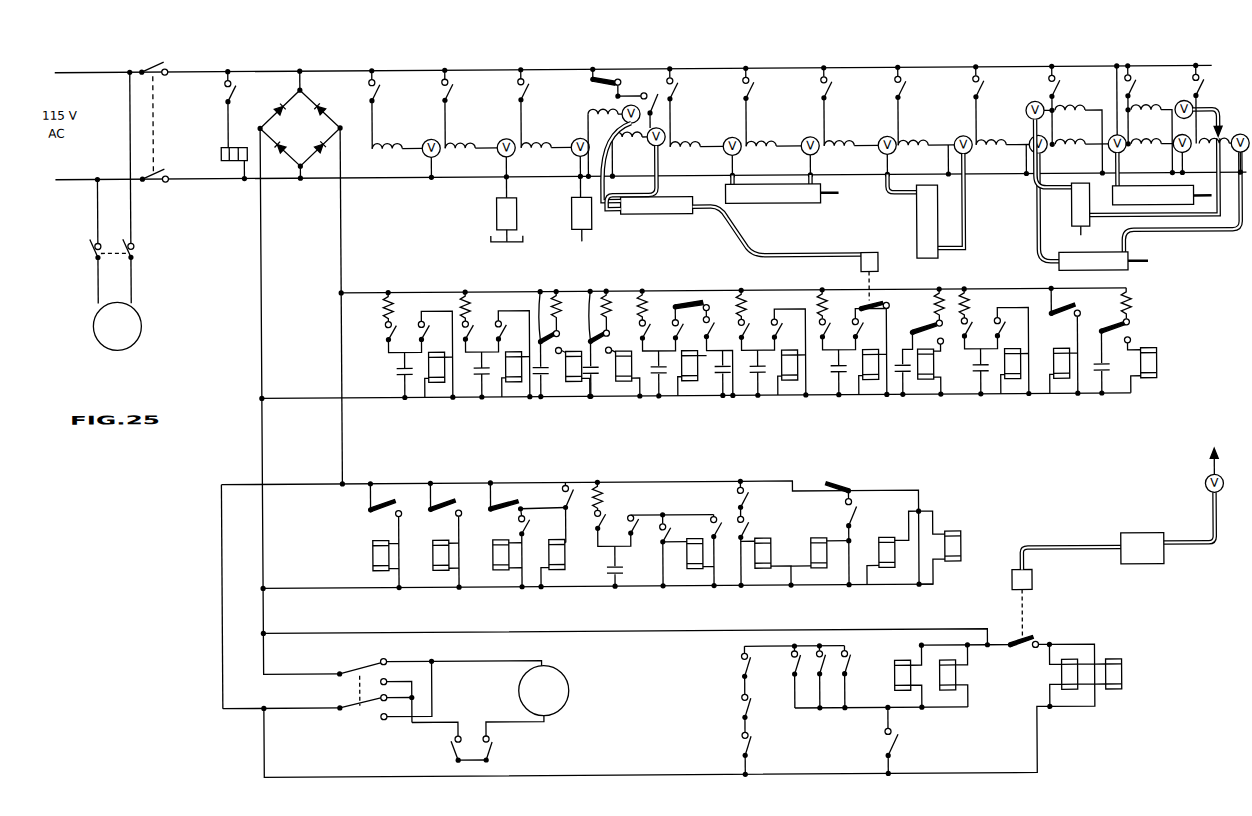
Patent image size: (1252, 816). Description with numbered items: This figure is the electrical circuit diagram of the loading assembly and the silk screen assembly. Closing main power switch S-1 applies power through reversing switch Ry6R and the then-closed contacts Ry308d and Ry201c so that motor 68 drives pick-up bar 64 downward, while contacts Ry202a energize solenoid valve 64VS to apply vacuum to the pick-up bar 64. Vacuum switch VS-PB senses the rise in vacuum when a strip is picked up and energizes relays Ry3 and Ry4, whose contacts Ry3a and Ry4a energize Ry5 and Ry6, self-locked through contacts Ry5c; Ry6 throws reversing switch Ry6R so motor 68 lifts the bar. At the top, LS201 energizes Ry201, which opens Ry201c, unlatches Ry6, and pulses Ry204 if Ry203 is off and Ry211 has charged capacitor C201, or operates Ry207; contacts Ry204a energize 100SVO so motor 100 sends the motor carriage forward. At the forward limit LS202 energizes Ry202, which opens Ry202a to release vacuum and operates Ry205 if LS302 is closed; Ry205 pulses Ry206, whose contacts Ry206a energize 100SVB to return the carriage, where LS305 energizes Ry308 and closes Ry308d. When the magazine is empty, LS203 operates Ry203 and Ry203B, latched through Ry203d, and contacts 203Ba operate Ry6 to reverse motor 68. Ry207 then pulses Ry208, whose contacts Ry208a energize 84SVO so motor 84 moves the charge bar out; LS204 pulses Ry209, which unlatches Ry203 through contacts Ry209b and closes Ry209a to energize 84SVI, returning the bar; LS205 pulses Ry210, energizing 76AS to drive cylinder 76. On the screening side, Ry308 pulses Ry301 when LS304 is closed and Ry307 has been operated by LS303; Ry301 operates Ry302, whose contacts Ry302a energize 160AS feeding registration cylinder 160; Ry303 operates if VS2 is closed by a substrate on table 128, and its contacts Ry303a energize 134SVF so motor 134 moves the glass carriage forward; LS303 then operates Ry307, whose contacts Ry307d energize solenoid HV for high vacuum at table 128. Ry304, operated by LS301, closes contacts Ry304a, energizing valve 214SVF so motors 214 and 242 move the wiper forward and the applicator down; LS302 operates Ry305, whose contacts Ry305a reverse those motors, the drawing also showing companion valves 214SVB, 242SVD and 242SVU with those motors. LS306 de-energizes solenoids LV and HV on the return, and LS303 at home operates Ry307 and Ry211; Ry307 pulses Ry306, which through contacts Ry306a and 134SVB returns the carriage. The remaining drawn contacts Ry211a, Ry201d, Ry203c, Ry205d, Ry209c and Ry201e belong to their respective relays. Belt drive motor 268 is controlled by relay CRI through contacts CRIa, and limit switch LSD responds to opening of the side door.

The motor 268 is at (140, 333).
The motor 68 is at (558, 670).
The cylinder 76 is at (498, 212).
The cylinder 160 is at (573, 213).
The cylinder 128 is at (660, 216).
The cylinder 100 is at (788, 205).
The cylinder 84 is at (918, 214).
The cylinder 242 is at (1073, 214).
The cylinder 214 is at (1140, 189).
The cylinder 134 is at (1088, 257).
The vacuum source unit 64 is at (1150, 540).
The vacuum valve 64VS is at (1226, 491).
The solenoid valve 76AS is at (477, 159).
The solenoid valve 160AS is at (551, 158).
The solenoid valve 100SVO is at (706, 149).
The solenoid valve 100SVB is at (784, 149).
The solenoid valve 84SVO is at (861, 148).
The solenoid valve 84SVI is at (937, 148).
The solenoid valve 134SVF is at (1012, 147).
The solenoid valve 134SVB is at (1226, 134).
The solenoid valve 242SVD is at (1036, 103).
The solenoid valve 242SVU is at (1197, 78).
The solenoid valve 214SVF is at (1116, 94).
The solenoid valve 214SVB is at (1193, 158).
The low vacuum valve LV is at (603, 142).
The high vacuum valve HV is at (637, 146).
The main switch S-1 is at (153, 113).
The limit switch LSD is at (243, 86).
The control relay coil CRI is at (223, 152).
The control relay contact CRIa is at (92, 256).
The capacitor C201 is at (621, 552).
The vacuum switch VS2 is at (876, 300).
The vacuum switch push button VS-PB is at (1032, 631).
The limit switch LS201 is at (392, 497).
The limit switch LS202 is at (452, 497).
The limit switch LS203 is at (512, 497).
The limit switch LS204 is at (544, 300).
The limit switch LS205 is at (594, 300).
The limit switch LS301 is at (1102, 325).
The limit switch LS302 is at (911, 330).
The limit switch LS303 is at (836, 484).
The limit switch LS304 is at (700, 300).
The limit switch LS305 is at (1058, 301).
The limit switch LS306 is at (613, 77).
The relay Ry201 is at (362, 527).
The relay Ry202 is at (433, 526).
The relay Ry203 is at (515, 525).
The relay Ry203B is at (565, 548).
The relay Ry204 is at (692, 515).
The relay Ry205 is at (825, 569).
The relay Ry206 is at (433, 412).
The relay Ry207 is at (778, 569).
The relay Ry208 is at (474, 303).
The relay Ry209 is at (574, 396).
The relay Ry210 is at (626, 396).
The relay Ry211 is at (884, 538).
The relay Ry301 is at (692, 396).
The relay Ry302 is at (738, 303).
The relay Ry303 is at (834, 303).
The relay Ry304 is at (1157, 381).
The relay Ry305 is at (918, 396).
The relay Ry306 is at (983, 305).
The relay Ry307 is at (961, 562).
The relay Ry308 is at (1064, 396).
The relay Ry3 is at (1078, 662).
The relay Ry4 is at (1124, 655).
The relay Ry5 is at (954, 672).
The relay Ry6 is at (905, 662).
The relay reversing contacts Ry6R is at (370, 661).
The relay contact Ry202a is at (636, 328).
The relay contact Ry302a is at (546, 107).
The relay contact Ry204a is at (695, 106).
The relay contact Ry206a is at (771, 105).
The relay contact Ry208a is at (849, 105).
The relay contact Ry209a is at (923, 104).
The relay contact Ry303a is at (1001, 104).
The relay contact Ry304a is at (1079, 119).
The relay contact Ry305a is at (1153, 119).
The relay contact Ry306a is at (1222, 102).
The relay contact Ry307d is at (652, 90).
The relay contact Ry203d is at (572, 474).
The relay contact Ry211a is at (601, 512).
The relay contact Ry201d is at (748, 490).
The relay contact Ry203c is at (745, 534).
The relay contact Ry209b is at (537, 524).
The relay contact Ry308d is at (450, 758).
The relay contact Ry201c is at (488, 742).
The relay contact Ry205d is at (742, 667).
The relay contact Ry209c is at (742, 707).
The relay contact Ry201e is at (742, 745).
The relay contact Ry5c is at (800, 648).
The relay contact Ry4a is at (824, 648).
The relay contact Ry3a is at (850, 648).
The relay contact 203Ba is at (883, 746).